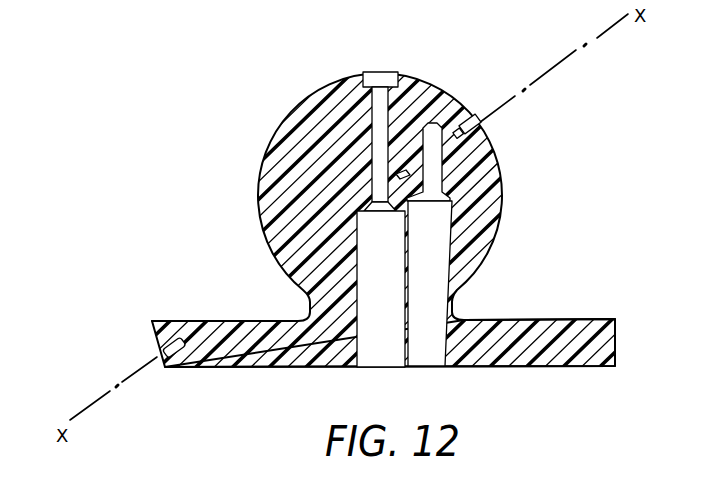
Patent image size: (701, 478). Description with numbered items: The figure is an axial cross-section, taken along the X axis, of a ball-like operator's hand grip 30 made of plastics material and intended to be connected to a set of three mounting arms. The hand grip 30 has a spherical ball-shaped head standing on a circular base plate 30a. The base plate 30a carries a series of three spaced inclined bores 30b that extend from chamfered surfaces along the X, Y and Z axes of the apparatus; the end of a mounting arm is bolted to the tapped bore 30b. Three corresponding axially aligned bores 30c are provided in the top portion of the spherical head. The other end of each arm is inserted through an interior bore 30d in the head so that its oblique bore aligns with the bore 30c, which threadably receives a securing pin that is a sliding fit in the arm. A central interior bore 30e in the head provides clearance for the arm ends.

The hand grip 30 is at (495, 249).
The circular base plate 30a is at (604, 336).
The inclined bore 30b is at (173, 368).
The axially aligned bore 30c is at (462, 110).
The interior bore 30d is at (502, 188).
The central interior bore 30e is at (357, 237).